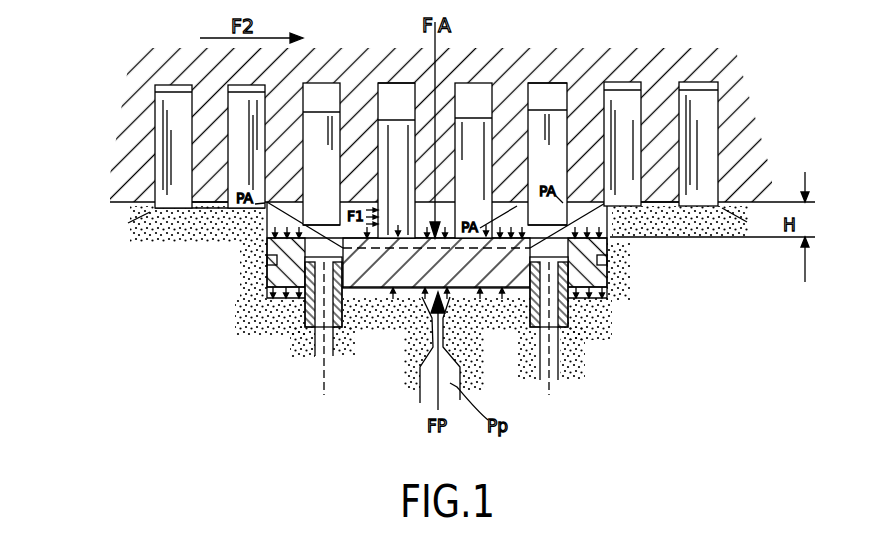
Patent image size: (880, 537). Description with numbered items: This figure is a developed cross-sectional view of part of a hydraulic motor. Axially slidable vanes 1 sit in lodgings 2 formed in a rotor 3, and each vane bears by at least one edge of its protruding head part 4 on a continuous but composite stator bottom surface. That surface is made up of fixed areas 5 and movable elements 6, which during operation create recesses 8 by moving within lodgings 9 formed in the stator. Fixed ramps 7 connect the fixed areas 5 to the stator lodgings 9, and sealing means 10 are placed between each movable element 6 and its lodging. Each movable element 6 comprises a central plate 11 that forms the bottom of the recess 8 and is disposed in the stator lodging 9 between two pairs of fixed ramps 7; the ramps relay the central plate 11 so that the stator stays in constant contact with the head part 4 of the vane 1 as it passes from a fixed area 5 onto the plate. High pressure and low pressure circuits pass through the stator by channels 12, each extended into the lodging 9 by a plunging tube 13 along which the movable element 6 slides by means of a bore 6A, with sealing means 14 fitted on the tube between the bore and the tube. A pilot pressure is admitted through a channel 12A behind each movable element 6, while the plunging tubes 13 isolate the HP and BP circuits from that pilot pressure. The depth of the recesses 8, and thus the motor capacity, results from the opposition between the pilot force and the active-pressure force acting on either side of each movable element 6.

The vane 1 is at (240, 107).
The lodging 2 is at (396, 74).
The rotor 3 is at (119, 132).
The protruding head part 4 is at (322, 200).
The fixed area 5 is at (206, 202).
The movable element 6 is at (392, 300).
The bore 6A is at (300, 251).
The fixed ramp 7 is at (322, 217).
The recess 8 is at (463, 196).
The stator lodging 9 is at (290, 302).
The sealing means 10 is at (268, 262).
The central plate 11 is at (406, 196).
The channel 12 is at (314, 353).
The pilot pressure channel 12A is at (417, 388).
The plunging tube 13 is at (303, 325).
The sealing means 14 is at (343, 263).